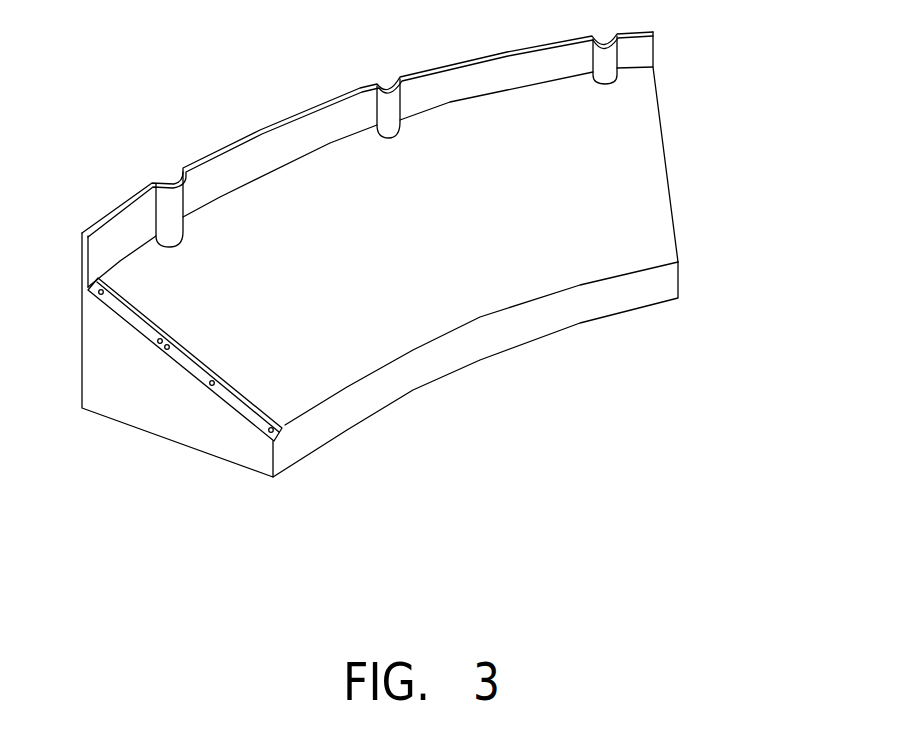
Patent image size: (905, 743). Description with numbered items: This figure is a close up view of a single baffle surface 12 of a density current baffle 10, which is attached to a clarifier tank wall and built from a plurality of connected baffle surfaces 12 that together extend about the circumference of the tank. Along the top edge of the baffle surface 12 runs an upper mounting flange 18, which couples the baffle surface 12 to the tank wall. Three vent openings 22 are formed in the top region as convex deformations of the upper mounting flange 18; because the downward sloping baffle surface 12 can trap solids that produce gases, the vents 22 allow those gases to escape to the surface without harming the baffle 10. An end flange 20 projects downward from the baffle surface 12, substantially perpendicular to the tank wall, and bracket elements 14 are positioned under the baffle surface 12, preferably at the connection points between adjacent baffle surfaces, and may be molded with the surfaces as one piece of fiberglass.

The density current baffle 10 is at (409, 256).
The baffle surface 12 is at (633, 219).
The bracket element 14 is at (665, 138).
The upper mounting flange 18 is at (262, 143).
The end flange 20 is at (589, 307).
The vent opening 22 is at (167, 198).